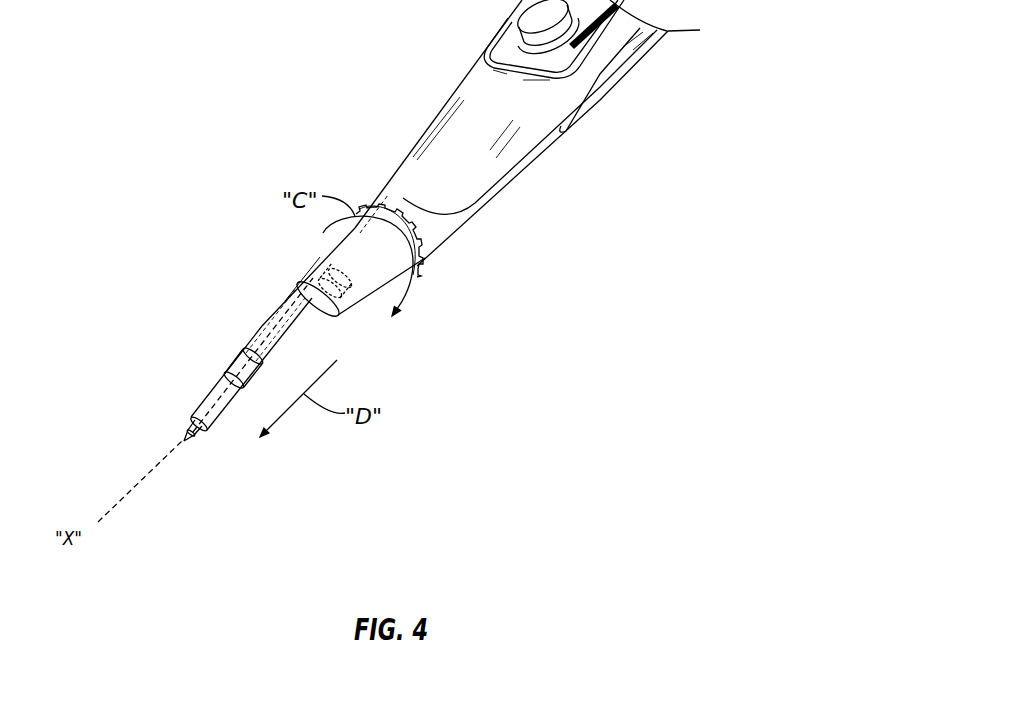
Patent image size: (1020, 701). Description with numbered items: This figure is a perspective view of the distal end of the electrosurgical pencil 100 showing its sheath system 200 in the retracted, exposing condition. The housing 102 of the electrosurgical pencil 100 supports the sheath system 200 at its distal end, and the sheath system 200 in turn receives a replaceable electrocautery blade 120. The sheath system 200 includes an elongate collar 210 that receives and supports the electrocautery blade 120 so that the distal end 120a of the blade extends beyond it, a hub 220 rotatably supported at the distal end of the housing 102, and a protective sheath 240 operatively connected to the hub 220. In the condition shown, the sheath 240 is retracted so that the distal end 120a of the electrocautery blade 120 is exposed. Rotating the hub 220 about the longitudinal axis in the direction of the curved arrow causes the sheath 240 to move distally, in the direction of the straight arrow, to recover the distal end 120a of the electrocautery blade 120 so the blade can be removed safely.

The electrosurgical pencil 100 is at (447, 84).
The housing 102 is at (400, 172).
The sheath system 200 is at (196, 252).
The hub 220 is at (317, 264).
The collar 210 is at (266, 328).
The protective sheath 240 is at (219, 370).
The electrocautery blade 120 is at (181, 423).
The distal end of electrocautery blade 120a is at (197, 445).